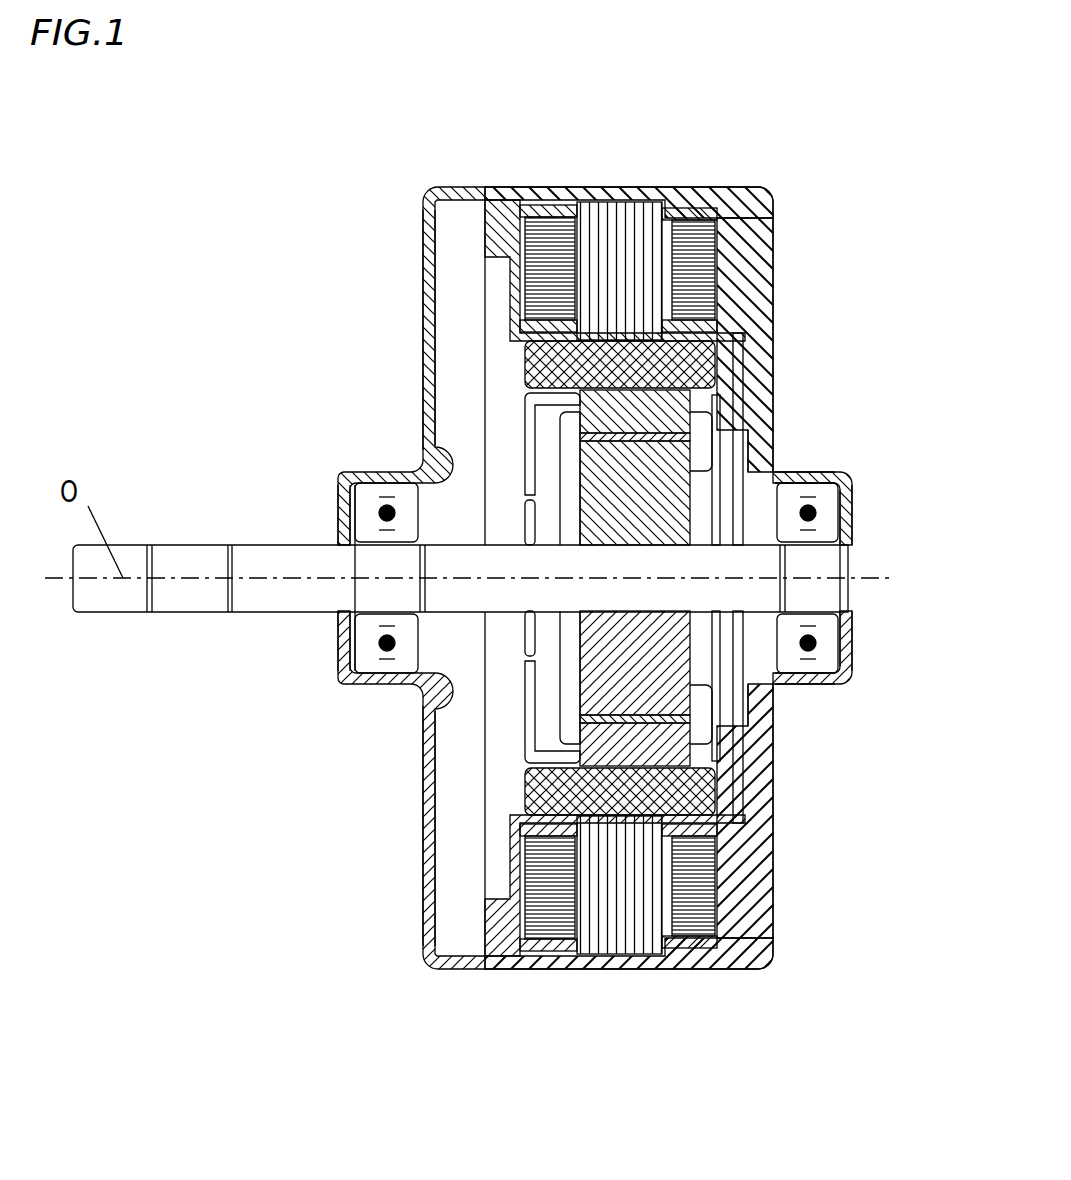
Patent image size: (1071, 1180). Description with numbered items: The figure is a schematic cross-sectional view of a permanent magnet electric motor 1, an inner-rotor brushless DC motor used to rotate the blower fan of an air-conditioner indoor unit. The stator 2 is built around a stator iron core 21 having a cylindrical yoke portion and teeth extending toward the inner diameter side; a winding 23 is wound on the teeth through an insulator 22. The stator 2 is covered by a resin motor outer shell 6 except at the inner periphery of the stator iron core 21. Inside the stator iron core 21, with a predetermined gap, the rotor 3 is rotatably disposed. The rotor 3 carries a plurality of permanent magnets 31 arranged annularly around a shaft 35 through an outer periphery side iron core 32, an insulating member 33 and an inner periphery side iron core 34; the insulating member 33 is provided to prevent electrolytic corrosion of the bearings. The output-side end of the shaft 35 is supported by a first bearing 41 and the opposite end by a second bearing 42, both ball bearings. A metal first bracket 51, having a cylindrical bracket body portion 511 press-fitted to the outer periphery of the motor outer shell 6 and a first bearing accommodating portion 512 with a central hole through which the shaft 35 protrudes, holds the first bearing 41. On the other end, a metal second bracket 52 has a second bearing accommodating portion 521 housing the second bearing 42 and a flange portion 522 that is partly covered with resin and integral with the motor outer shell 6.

The permanent magnet electric motor 1 is at (372, 177).
The stator 2 is at (556, 200).
The stator iron core 21 is at (590, 205).
The motor outer shell 6 is at (723, 184).
The insulator 22 is at (735, 215).
The winding 23 is at (728, 267).
The rotor 3 is at (714, 430).
The permanent magnets 31 is at (714, 360).
The outer periphery side iron core 32 is at (705, 765).
The insulating member 33 is at (692, 722).
The inner periphery side iron core 34 is at (665, 642).
The shaft 35 is at (185, 557).
The first bearing 41 is at (350, 628).
The second bearing 42 is at (853, 512).
The first bracket 51 is at (422, 728).
The bracket body portion 511 is at (422, 417).
The first bearing accommodating portion 512 is at (338, 508).
The second bracket 52 is at (856, 631).
The second bearing accommodating portion 521 is at (848, 500).
The flange portion 522 is at (780, 473).